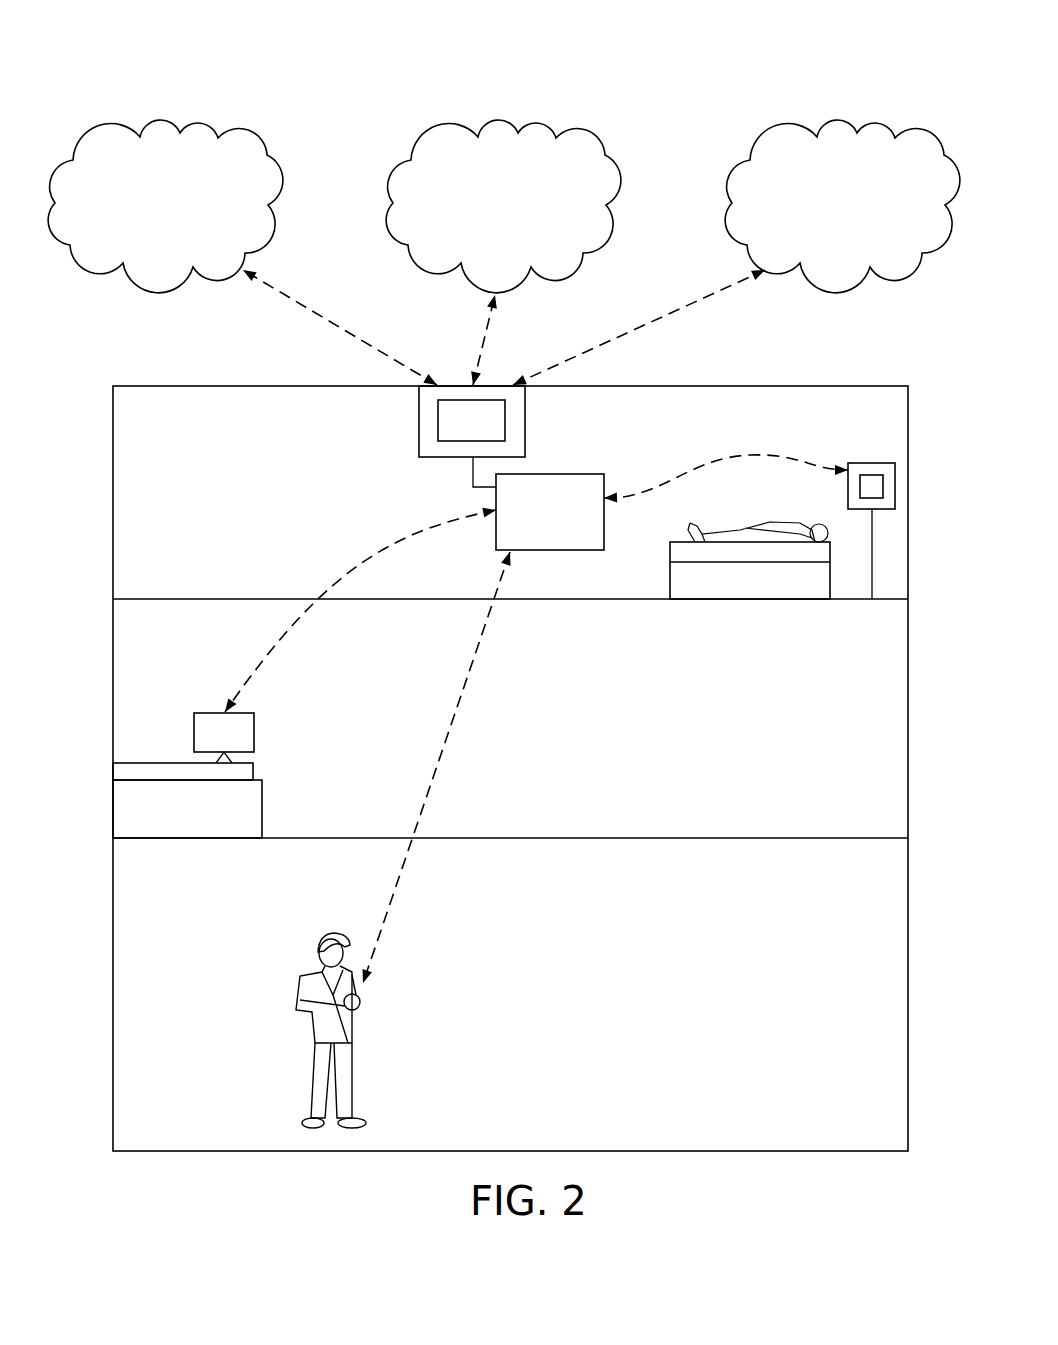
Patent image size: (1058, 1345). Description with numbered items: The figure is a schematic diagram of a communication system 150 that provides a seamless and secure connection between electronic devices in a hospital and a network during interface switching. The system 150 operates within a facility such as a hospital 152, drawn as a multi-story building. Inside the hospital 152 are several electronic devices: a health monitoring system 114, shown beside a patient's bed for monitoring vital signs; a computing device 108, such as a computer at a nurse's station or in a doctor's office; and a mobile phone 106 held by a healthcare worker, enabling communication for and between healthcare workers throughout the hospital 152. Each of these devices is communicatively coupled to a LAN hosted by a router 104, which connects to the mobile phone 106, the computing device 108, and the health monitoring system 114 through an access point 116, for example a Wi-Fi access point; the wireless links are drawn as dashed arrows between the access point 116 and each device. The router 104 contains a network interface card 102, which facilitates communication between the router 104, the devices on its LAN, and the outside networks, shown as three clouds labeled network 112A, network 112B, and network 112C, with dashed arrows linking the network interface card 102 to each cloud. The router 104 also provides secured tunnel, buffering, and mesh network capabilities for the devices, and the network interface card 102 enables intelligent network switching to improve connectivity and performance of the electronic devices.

The communication system 150 is at (295, 62).
The hospital 152 is at (735, 386).
The network 112A is at (265, 132).
The network 112B is at (603, 130).
The network 112C is at (833, 113).
The network interface card 102 is at (437, 413).
The router 104 is at (419, 447).
The access point 116 is at (575, 474).
The health monitoring system 114 is at (858, 463).
The computing device 108 is at (255, 733).
The mobile phone 106 is at (362, 995).